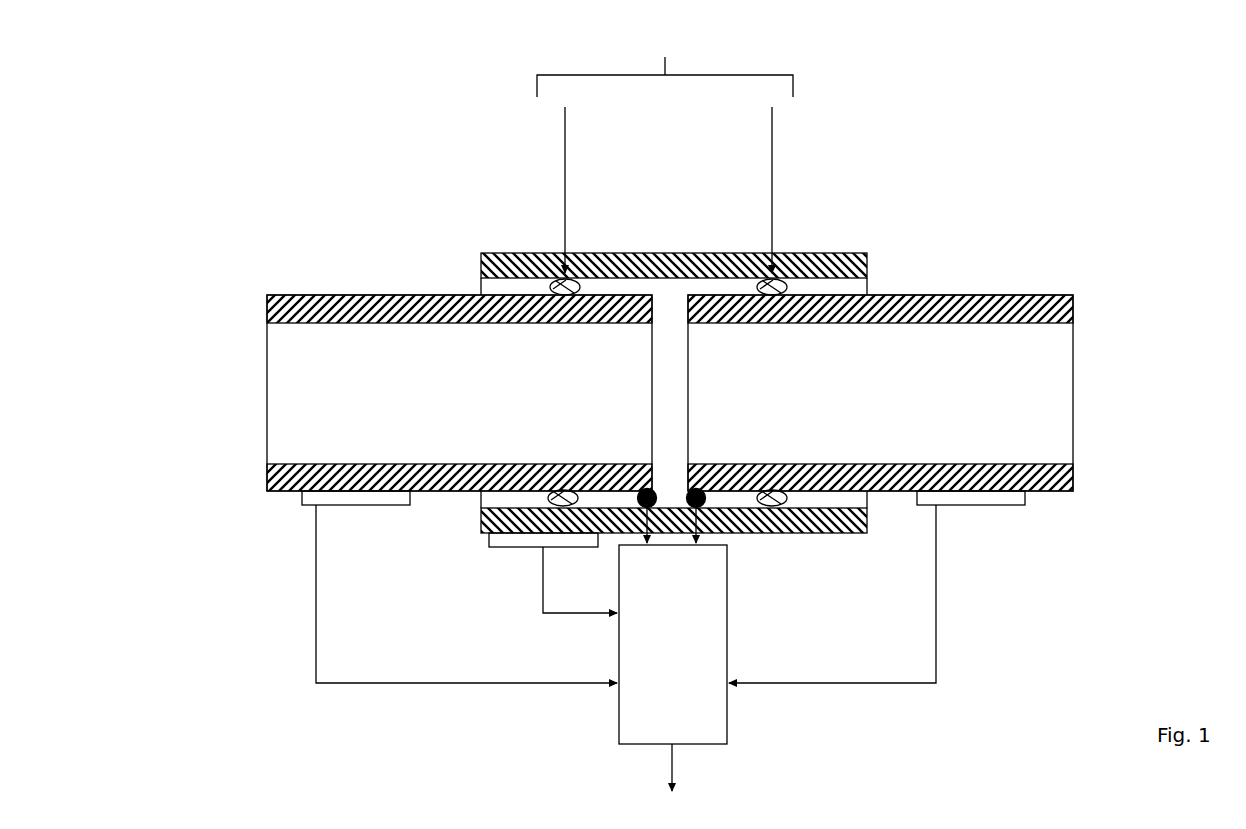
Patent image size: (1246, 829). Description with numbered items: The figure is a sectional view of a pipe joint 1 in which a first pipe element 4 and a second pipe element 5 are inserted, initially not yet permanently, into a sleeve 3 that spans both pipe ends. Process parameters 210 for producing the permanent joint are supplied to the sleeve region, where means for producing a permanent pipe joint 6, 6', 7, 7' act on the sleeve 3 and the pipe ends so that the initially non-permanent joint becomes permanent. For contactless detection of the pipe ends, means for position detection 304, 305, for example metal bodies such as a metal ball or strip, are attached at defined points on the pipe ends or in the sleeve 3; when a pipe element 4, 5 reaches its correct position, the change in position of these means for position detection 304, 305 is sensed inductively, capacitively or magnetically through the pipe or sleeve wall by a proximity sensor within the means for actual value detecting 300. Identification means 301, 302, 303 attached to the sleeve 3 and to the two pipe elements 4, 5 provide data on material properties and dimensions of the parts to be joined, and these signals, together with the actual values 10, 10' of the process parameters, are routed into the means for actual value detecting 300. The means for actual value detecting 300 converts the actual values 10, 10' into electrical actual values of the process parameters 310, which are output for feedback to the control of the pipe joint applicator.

The pipe joint 1 is at (158, 160).
The sleeve 3 is at (652, 253).
The first pipe element 4 is at (358, 295).
The second pipe element 5 is at (968, 295).
The means for producing a permanent pipe joint 6 is at (809, 244).
The means for producing a permanent pipe joint 7 is at (547, 242).
The means for producing a permanent pipe joint 6' is at (796, 460).
The means for producing a permanent pipe joint 7' is at (553, 457).
The actual value of the process parameters 10 is at (887, 594).
The actual value of the process parameters 10' is at (490, 594).
The process parameters 210 is at (665, 146).
The means for actual value detecting 300 is at (715, 703).
The identification means 301 is at (505, 547).
The identification means 302 is at (356, 505).
The identification means 303 is at (975, 505).
The means for position detection 304 is at (622, 490).
The means for position detection 305 is at (732, 490).
The electrical actual values of the process parameters 310 is at (672, 762).